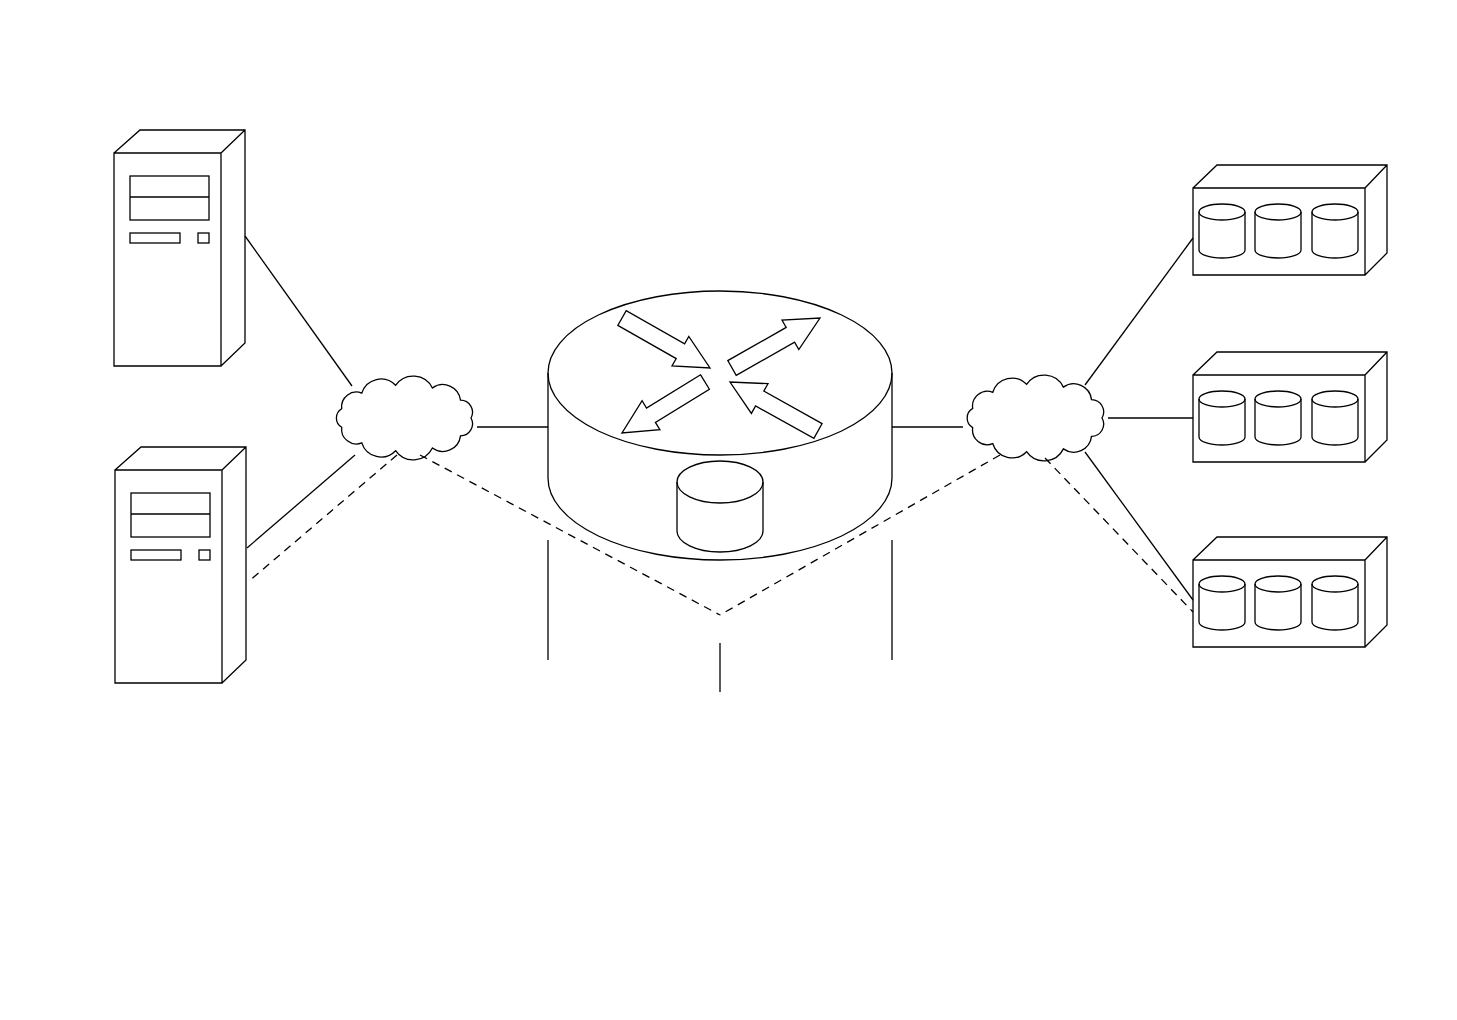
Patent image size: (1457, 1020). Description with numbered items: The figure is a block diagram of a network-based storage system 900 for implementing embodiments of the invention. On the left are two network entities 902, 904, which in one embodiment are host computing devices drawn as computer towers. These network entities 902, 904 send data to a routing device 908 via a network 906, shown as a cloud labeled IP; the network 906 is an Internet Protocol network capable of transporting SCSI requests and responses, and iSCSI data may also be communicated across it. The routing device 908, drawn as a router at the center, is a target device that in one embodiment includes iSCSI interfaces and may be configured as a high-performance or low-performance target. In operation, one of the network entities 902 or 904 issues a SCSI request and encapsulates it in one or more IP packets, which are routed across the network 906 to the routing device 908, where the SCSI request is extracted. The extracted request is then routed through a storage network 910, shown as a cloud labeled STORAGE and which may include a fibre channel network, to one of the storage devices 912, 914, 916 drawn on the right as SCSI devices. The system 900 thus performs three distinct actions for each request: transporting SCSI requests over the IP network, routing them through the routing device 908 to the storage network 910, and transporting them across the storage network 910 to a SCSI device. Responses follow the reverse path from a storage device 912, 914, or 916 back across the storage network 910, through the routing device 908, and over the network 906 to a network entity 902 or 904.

The system 900 is at (441, 70).
The network entity 902 is at (248, 186).
The network entity 904 is at (248, 480).
The network 906 is at (430, 378).
The routing device 908 is at (721, 291).
The storage network 910 is at (1019, 379).
The storage device 912 is at (1390, 209).
The storage device 914 is at (1390, 395).
The storage device 916 is at (1390, 580).